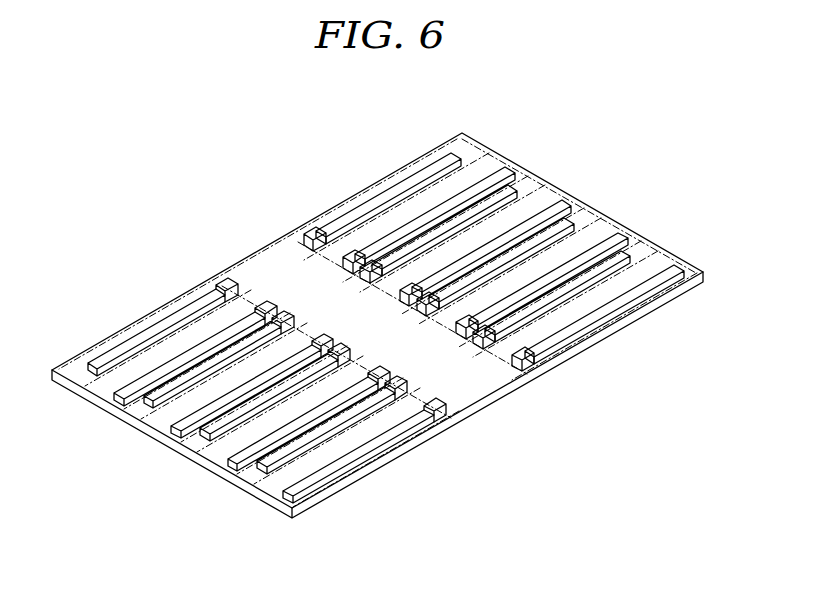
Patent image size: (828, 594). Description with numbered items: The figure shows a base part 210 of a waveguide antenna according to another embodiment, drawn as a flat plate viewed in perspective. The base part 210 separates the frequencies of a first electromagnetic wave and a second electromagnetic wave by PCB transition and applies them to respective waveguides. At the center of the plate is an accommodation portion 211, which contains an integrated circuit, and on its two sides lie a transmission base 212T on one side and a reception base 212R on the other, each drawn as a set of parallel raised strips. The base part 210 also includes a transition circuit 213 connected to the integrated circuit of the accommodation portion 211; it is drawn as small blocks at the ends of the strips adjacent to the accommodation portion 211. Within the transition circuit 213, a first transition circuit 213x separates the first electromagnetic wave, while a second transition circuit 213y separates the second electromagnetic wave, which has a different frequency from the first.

The base part 210 is at (198, 176).
The accommodation portion 211 is at (508, 395).
The transmission base 212T is at (206, 263).
The reception base 212R is at (436, 128).
The transition circuit 213 is at (375, 399).
The first transition circuit 213x is at (397, 408).
The second transition circuit 213y is at (441, 425).